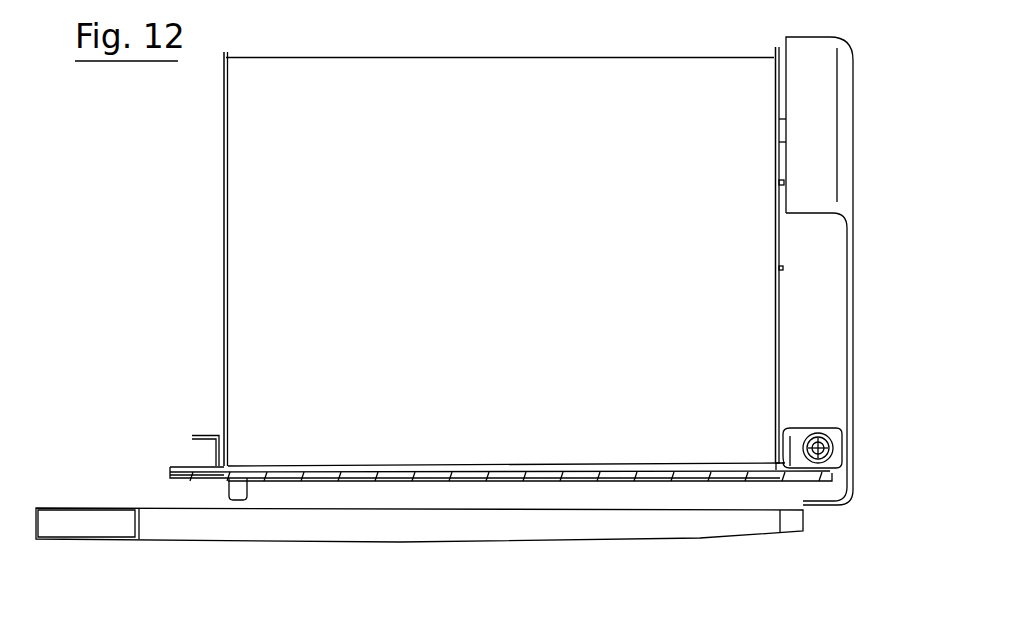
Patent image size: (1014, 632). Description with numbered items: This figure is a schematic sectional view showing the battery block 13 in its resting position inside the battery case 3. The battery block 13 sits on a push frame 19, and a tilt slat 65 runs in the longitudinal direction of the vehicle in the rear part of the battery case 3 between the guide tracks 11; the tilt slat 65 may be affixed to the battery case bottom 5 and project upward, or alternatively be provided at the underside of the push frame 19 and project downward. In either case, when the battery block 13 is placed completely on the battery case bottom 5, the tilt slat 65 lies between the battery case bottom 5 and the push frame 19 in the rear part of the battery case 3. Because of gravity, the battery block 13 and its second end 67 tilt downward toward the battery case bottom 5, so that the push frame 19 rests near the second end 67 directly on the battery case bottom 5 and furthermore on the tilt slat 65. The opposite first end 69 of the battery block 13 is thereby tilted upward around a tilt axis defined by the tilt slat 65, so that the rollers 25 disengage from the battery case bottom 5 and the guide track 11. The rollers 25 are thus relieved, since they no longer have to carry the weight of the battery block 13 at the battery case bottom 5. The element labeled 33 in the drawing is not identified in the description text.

The battery case 3 is at (790, 348).
The battery case bottom 5 is at (690, 480).
The guide track 11 is at (800, 466).
The battery block 13 is at (247, 320).
The push frame 19 is at (535, 465).
The roller 25 is at (833, 436).
The base rail 33 is at (353, 522).
The tilt slat 65 is at (635, 472).
The second end 67 is at (238, 462).
The first end 69 is at (782, 450).